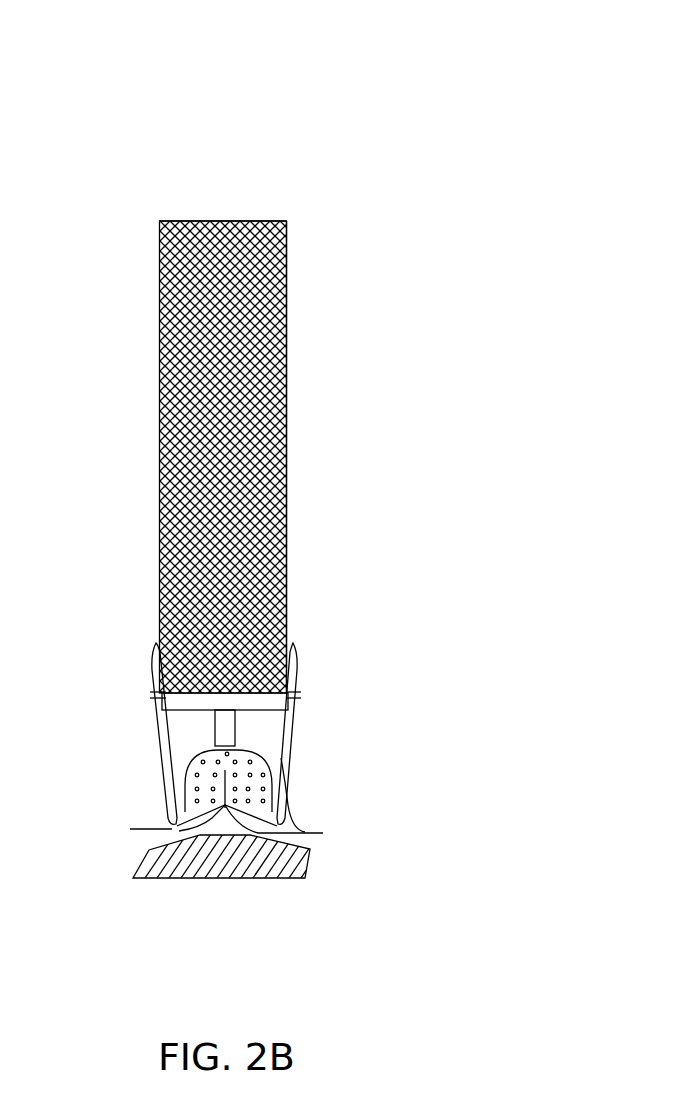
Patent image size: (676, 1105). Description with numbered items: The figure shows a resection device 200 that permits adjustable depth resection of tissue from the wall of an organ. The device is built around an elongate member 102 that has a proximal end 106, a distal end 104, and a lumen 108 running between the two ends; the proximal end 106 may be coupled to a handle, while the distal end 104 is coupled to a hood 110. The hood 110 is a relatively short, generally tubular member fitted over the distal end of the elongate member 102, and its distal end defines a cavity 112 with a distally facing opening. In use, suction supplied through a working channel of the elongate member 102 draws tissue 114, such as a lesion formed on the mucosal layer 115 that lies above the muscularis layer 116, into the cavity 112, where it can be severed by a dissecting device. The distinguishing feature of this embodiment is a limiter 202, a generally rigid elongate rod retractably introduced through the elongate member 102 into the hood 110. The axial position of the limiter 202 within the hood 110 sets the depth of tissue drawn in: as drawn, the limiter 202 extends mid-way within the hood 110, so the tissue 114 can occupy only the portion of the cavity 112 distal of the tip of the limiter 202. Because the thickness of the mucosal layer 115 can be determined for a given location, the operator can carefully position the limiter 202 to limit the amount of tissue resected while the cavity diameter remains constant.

The resection device 200 is at (490, 78).
The elongate member 102 is at (295, 510).
The proximal end 106 is at (285, 270).
The lumen 108 is at (255, 221).
The distal end 104 is at (298, 668).
The limiter 202 is at (215, 738).
The hood 110 is at (277, 773).
The cavity 112 is at (305, 832).
The tissue 114 is at (197, 800).
The mucosal layer 115 is at (145, 827).
The muscularis layer 116 is at (140, 868).